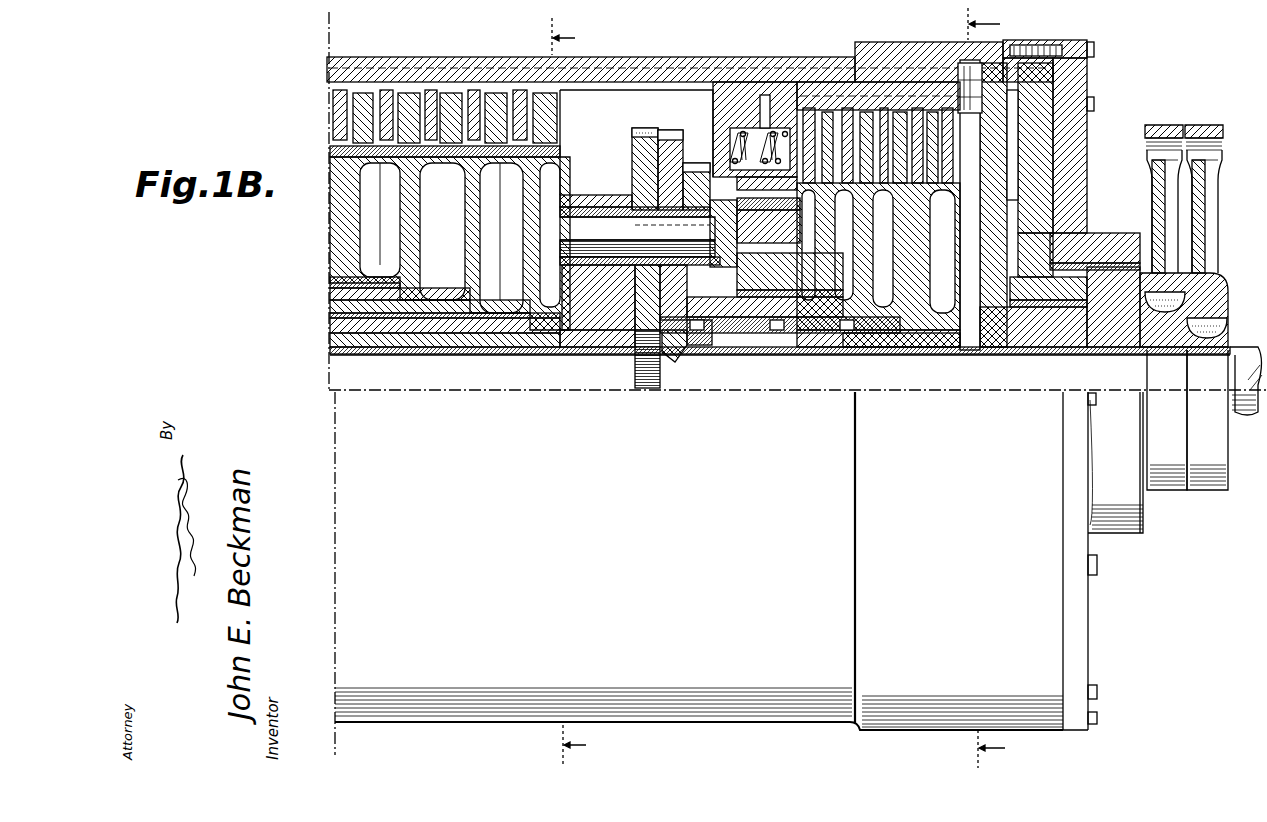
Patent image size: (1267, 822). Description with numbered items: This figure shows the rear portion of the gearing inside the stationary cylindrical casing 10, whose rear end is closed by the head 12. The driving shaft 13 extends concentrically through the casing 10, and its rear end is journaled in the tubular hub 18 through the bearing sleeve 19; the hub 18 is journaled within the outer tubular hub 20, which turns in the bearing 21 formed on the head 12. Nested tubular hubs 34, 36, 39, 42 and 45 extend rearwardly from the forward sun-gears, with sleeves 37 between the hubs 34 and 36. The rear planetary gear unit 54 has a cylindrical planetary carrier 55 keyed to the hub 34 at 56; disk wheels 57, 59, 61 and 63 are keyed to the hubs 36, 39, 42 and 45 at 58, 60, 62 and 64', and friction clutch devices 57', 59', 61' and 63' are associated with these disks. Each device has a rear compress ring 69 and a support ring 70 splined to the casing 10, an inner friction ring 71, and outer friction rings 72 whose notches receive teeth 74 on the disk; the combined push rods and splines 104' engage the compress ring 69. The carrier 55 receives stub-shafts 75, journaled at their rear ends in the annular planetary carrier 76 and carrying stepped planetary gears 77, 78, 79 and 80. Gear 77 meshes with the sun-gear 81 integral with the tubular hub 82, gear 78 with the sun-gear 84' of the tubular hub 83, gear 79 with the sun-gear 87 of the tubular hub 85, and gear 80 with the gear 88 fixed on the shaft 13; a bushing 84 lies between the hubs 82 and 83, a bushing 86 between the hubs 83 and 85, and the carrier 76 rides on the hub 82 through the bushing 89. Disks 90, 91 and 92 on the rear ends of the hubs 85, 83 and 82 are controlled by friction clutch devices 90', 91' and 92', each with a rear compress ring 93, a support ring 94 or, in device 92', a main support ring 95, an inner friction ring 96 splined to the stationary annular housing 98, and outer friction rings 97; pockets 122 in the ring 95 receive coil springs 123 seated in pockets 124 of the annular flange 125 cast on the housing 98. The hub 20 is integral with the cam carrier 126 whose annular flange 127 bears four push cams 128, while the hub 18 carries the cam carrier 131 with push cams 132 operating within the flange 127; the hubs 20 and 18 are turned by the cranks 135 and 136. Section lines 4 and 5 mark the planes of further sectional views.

The stationary casing 10 is at (699, 561).
The head 12 is at (1078, 630).
The driving shaft 13 is at (1240, 357).
The tubular hub 18 is at (1140, 340).
The bearing sleeve 19 is at (1110, 320).
The outer tubular hub 20 is at (1068, 300).
The bearing 21 is at (1110, 248).
The tubular hub 34 is at (470, 345).
The tubular hub 36 is at (392, 325).
The sleeves or bushings 37 is at (440, 335).
The tubular hub 39 is at (370, 320).
The tubular hub 42 is at (345, 300).
The tubular hub 45 is at (335, 290).
The rear planetary gear unit 54 is at (672, 130).
The cylindrical planetary carrier 55 is at (597, 300).
The keyed connection 56 is at (572, 332).
The disk wheel 57 is at (566, 235).
The friction clutch device 57' is at (507, 91).
The keyed connection 58 is at (540, 300).
The disk wheel 59 is at (444, 231).
The friction clutch device 59' is at (453, 91).
The keyed connection 60 is at (495, 300).
The disk 61 is at (396, 233).
The friction clutch device 61' is at (406, 91).
The keyed connection 62 is at (425, 288).
The disk 63 is at (432, 243).
The friction clutch device 63' is at (352, 91).
The keyed connection 64' is at (337, 273).
The rear compress ring 69 is at (555, 88).
The support ring 70 is at (540, 80).
The inner friction ring 71 is at (333, 85).
The outer friction rings 72 is at (395, 163).
The teeth 74 is at (340, 175).
The stub-shafts 75 is at (640, 230).
The annular planetary carrier 76 is at (790, 275).
The planetary gear 77 is at (722, 300).
The planetary gear 78 is at (700, 330).
The planetary gear 79 is at (690, 345).
The planetary gear 80 is at (640, 178).
The sun-gear 81 is at (740, 300).
The tubular hub 82 is at (805, 310).
The tubular hub 83 is at (835, 325).
The sleeve or bushing 84 is at (710, 386).
The sun-gear 84' is at (847, 297).
The tubular hub 85 is at (890, 340).
The bearing or bushing 86 is at (888, 350).
The sun-gear 87 is at (672, 360).
The gear 88 is at (640, 388).
The bushing or bearing 89 is at (750, 280).
The disk 90 is at (887, 265).
The friction clutch device 90' is at (917, 69).
The disk 91 is at (914, 251).
The friction clutch device 91' is at (880, 101).
The disk 92 is at (830, 245).
The friction clutch device 92' is at (876, 108).
The rear compress ring 93 is at (990, 85).
The support ring 94 is at (912, 112).
The main support ring 95 is at (765, 100).
The inner friction ring 96 is at (960, 130).
The outer friction rings 97 is at (930, 155).
The stationary annular housing 98 is at (835, 112).
The push rods and splines 104' is at (636, 138).
The pockets 122 is at (760, 90).
The coil spring 123 is at (725, 90).
The pockets 124 is at (680, 70).
The annular flange 125 is at (740, 150).
The cam carrier 126 is at (1045, 255).
The annular flange 127 is at (1033, 80).
The push cams 128 is at (970, 70).
The cam carrier 131 is at (985, 355).
The push cams 132 is at (1032, 50).
The crank 135 is at (1178, 186).
The crank 136 is at (1210, 232).
The section line 4 is at (559, 391).
The section line 5 is at (977, 388).